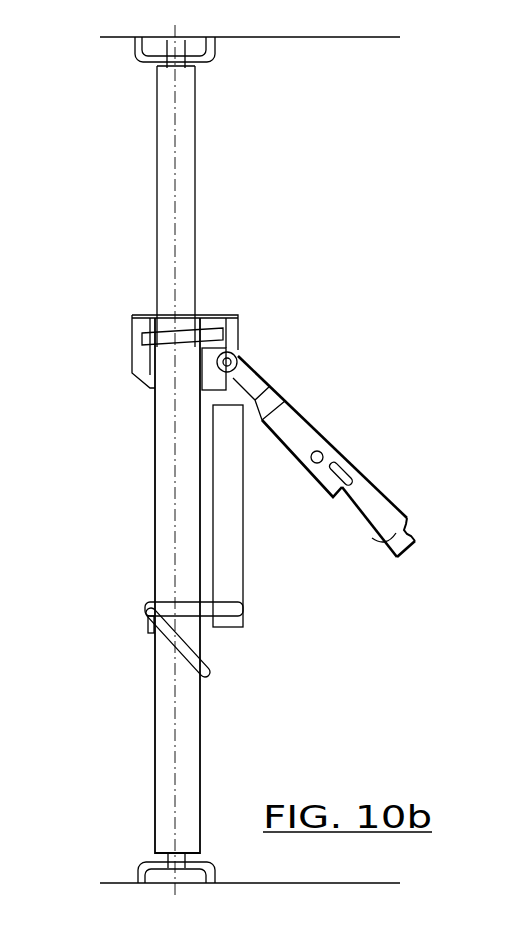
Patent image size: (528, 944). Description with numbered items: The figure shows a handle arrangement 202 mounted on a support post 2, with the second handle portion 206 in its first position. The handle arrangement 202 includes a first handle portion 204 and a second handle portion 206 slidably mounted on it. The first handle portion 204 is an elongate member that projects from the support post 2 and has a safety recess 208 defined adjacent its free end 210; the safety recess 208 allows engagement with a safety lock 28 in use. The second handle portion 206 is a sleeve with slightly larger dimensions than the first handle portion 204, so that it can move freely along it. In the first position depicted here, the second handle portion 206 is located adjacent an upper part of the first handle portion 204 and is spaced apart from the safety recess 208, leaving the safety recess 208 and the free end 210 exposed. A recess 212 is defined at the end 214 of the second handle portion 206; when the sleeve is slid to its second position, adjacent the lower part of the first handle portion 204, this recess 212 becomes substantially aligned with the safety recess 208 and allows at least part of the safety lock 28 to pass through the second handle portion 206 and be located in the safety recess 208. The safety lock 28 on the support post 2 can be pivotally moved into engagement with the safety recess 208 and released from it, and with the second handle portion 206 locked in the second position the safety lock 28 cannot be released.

The support post 2 is at (170, 440).
The second handle portion 206 is at (297, 420).
The handle arrangement 202 is at (335, 312).
The recess 212 is at (343, 455).
The first handle portion 204 is at (357, 497).
The safety recess 208 is at (410, 532).
The free end 210 is at (408, 553).
The end 214 is at (320, 490).
The safety lock 28 is at (245, 608).